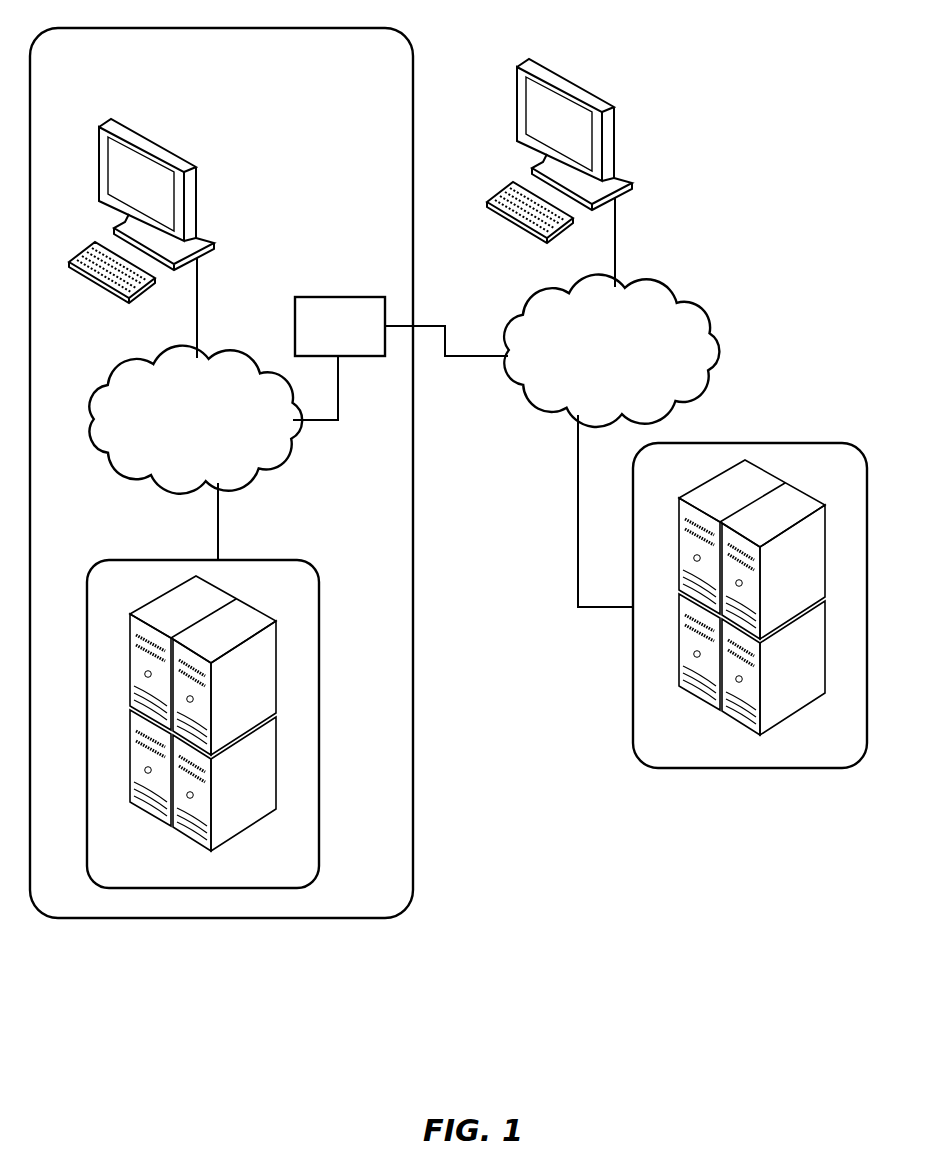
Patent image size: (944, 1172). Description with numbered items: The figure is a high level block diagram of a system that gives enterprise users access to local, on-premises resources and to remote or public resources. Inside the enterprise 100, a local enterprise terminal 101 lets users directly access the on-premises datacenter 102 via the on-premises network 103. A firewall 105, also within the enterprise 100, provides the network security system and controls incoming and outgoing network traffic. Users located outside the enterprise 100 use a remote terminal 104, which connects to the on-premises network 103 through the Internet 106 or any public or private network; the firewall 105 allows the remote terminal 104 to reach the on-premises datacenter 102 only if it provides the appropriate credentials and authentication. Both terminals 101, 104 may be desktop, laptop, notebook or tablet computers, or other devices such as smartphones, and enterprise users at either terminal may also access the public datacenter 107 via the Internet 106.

The enterprise 100 is at (413, 738).
The local enterprise terminal 101 is at (160, 144).
The on-premises datacenter 102 is at (132, 560).
The on-premises network 103 is at (107, 377).
The remote terminal 104 is at (598, 92).
The firewall 105 is at (295, 328).
The Internet 106 is at (690, 307).
The public datacenter 107 is at (808, 443).